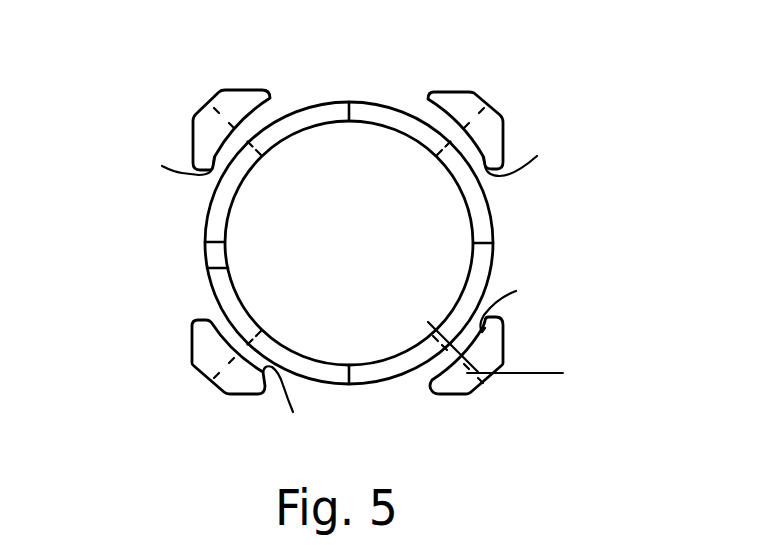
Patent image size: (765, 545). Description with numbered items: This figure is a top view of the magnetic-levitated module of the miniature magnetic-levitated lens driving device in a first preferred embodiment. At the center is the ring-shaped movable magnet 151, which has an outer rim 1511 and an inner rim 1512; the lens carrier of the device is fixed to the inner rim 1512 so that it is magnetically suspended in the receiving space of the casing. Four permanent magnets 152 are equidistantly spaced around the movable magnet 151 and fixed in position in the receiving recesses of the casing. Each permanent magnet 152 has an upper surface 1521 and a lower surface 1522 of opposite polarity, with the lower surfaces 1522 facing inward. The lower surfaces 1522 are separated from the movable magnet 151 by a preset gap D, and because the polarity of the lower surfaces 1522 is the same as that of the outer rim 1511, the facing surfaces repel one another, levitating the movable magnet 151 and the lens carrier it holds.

The movable magnet 151 is at (223, 301).
The outer rim 1511 is at (205, 253).
The inner rim 1512 is at (207, 268).
The permanent magnet 152 is at (205, 122).
The upper surface 1521 is at (205, 132).
The lower surface 1522 is at (348, 292).
The preset gap D is at (515, 360).